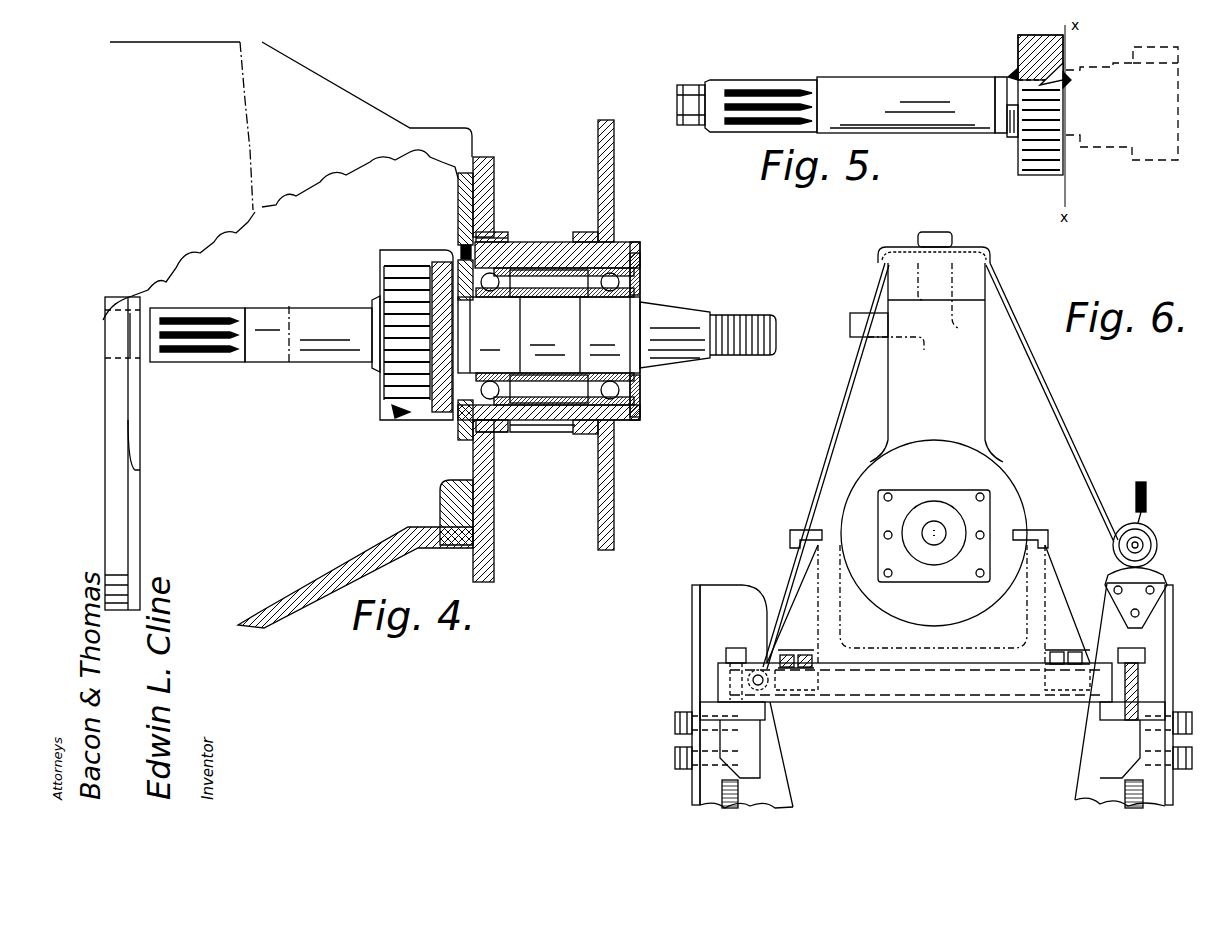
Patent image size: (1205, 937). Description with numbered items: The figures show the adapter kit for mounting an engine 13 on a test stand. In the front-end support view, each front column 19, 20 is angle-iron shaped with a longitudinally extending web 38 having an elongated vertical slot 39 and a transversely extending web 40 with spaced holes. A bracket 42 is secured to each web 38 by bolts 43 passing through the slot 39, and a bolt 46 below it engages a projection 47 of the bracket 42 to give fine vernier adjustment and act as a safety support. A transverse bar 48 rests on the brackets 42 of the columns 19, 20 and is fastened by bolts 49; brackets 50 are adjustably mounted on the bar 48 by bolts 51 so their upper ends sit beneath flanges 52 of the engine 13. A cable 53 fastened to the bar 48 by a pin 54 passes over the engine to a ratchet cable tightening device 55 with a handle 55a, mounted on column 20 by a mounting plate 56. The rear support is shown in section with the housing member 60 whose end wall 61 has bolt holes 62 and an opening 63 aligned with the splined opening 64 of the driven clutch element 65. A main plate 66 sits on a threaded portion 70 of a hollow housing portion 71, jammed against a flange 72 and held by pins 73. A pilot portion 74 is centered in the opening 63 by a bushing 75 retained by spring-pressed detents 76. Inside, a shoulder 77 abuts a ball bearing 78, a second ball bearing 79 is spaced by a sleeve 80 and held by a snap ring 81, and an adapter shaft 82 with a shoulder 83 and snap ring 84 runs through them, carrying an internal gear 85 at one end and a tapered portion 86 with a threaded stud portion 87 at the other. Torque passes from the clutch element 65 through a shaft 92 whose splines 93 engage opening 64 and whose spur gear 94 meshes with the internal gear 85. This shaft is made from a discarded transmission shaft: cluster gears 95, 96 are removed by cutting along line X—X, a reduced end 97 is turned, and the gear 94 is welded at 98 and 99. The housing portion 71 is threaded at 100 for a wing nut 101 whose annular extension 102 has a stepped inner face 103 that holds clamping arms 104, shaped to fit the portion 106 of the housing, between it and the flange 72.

In FIG. 6, the engine 13 is at (980, 410).
In FIG. 6, the front column 19 is at (695, 650).
In FIG. 6, the front column 20 is at (1170, 640).
In FIG. 6, the longitudinally extending web 38 is at (695, 585).
In FIG. 6, the elongated vertical slot 39 is at (694, 603).
In FIG. 6, the transversely extending web 40 is at (782, 780).
In FIG. 6, the bracket 42 is at (765, 708).
In FIG. 6, the bolts 43 is at (675, 752).
In FIG. 6, the bolt 46 is at (720, 792).
In FIG. 6, the projection 47 is at (740, 775).
In FIG. 6, the transverse bar 48 is at (968, 690).
In FIG. 6, the bolts 49 is at (736, 648).
In FIG. 6, the brackets 50 is at (812, 580).
In FIG. 6, the bolts 51 is at (798, 654).
In FIG. 6, the flanges 52 is at (797, 537).
In FIG. 6, the cable 53 is at (832, 425).
In FIG. 6, the pin 54 is at (758, 670).
In FIG. 6, the cable tightening device 55 is at (1152, 530).
In FIG. 6, the handle 55a is at (1142, 480).
In FIG. 6, the mounting plate 56 is at (1158, 575).
In FIG. 4, the housing member 60 is at (367, 112).
In FIG. 6, the housing member 60 is at (940, 490).
In FIG. 4, the end wall 61 is at (466, 500).
In FIG. 6, the end wall 61 is at (935, 575).
In FIG. 6, the bolt holes 62 is at (890, 494).
In FIG. 4, the opening 63 is at (460, 208).
In FIG. 6, the opening 63 is at (962, 520).
In FIG. 4, the opening 64 is at (118, 360).
In FIG. 6, the opening 64 is at (934, 528).
In FIG. 4, the driven element 65 is at (122, 507).
In FIG. 4, the main plate 66 is at (488, 160).
In FIG. 4, the threaded portion 70 is at (498, 232).
In FIG. 4, the housing portion 71 is at (548, 245).
In FIG. 4, the flange 72 is at (505, 433).
In FIG. 4, the pins 73 is at (503, 238).
In FIG. 4, the pilot portion 74 is at (458, 430).
In FIG. 4, the bushing 75 is at (457, 452).
In FIG. 4, the spring-pressed detents 76 is at (462, 247).
In FIG. 4, the shoulder 77 is at (440, 402).
In FIG. 4, the ball bearing 78 is at (505, 390).
In FIG. 4, the ball bearing 79 is at (622, 422).
In FIG. 4, the sleeve 80 is at (549, 281).
In FIG. 4, the snap ring 81 is at (632, 258).
In FIG. 4, the adapter shaft 82 is at (555, 380).
In FIG. 4, the shoulder 83 is at (470, 326).
In FIG. 4, the snap ring 84 is at (640, 290).
In FIG. 4, the internal gear 85 is at (383, 250).
In FIG. 4, the tapered portion 86 is at (692, 305).
In FIG. 4, the threaded stud portion 87 is at (752, 310).
In FIG. 4, the shaft 92 is at (260, 315).
In FIG. 5, the shaft 92 is at (908, 85).
In FIG. 4, the splines 93 is at (185, 315).
In FIG. 5, the splines 93 is at (737, 80).
In FIG. 4, the spur gear 94 is at (380, 388).
In FIG. 5, the spur gear 94 is at (1035, 172).
In FIG. 5, the cluster gear 95 is at (1103, 135).
In FIG. 5, the cluster gear 96 is at (1152, 160).
In FIG. 5, the reduced end 97 is at (1068, 78).
In FIG. 5, the weld 98 is at (1010, 70).
In FIG. 5, the weld 99 is at (1070, 82).
In FIG. 4, the threads 100 is at (612, 232).
In FIG. 4, the wing nut 101 is at (615, 505).
In FIG. 4, the annular extension 102 is at (585, 232).
In FIG. 4, the stepped inner face 103 is at (577, 435).
In FIG. 4, the clamping arms 104 is at (550, 428).
In FIG. 4, the portion 106 is at (540, 244).